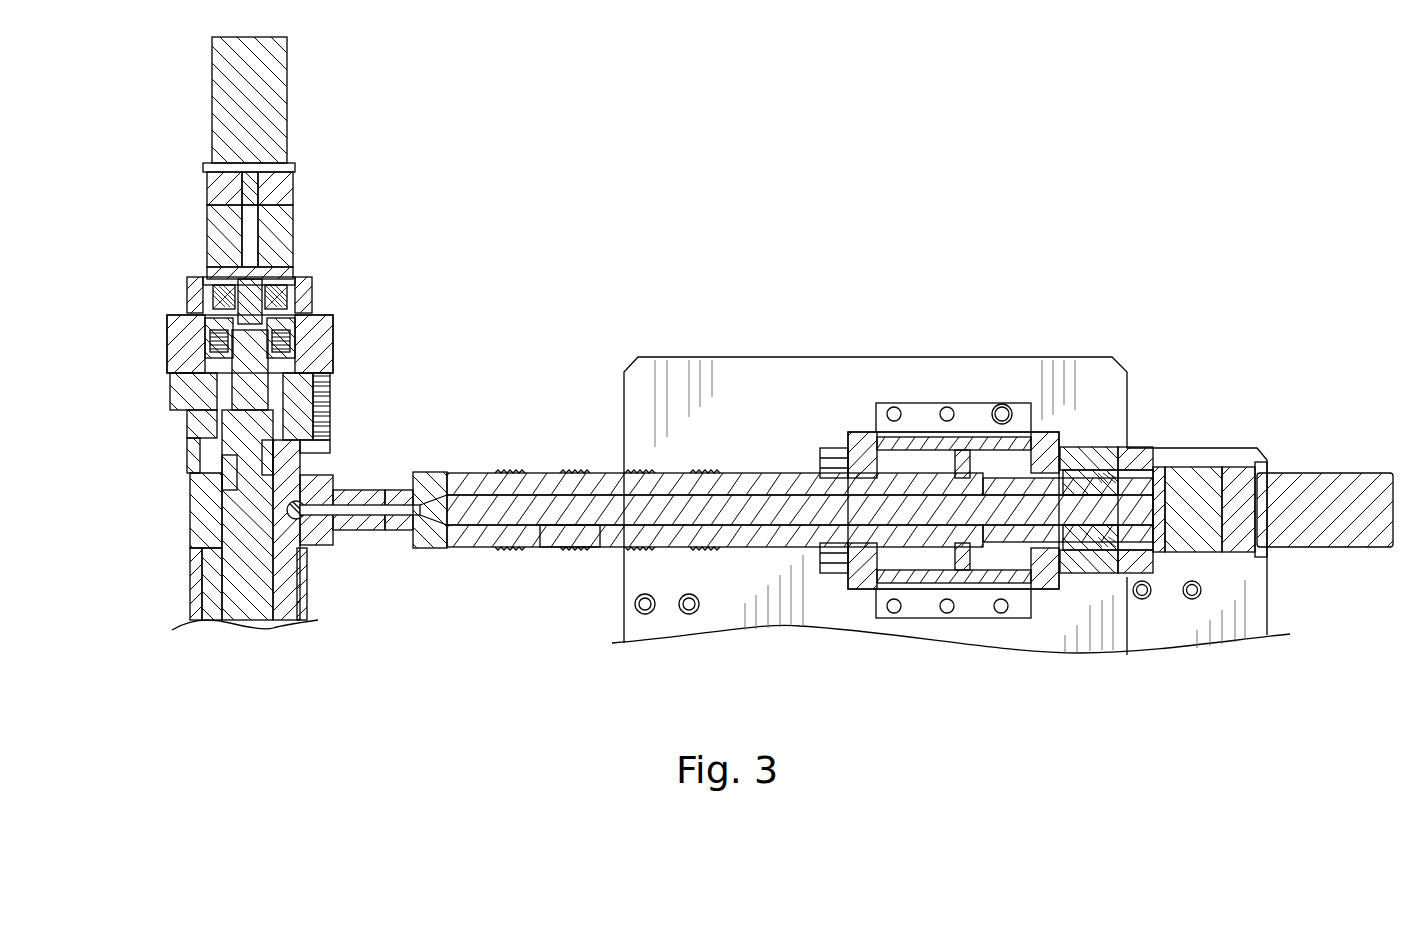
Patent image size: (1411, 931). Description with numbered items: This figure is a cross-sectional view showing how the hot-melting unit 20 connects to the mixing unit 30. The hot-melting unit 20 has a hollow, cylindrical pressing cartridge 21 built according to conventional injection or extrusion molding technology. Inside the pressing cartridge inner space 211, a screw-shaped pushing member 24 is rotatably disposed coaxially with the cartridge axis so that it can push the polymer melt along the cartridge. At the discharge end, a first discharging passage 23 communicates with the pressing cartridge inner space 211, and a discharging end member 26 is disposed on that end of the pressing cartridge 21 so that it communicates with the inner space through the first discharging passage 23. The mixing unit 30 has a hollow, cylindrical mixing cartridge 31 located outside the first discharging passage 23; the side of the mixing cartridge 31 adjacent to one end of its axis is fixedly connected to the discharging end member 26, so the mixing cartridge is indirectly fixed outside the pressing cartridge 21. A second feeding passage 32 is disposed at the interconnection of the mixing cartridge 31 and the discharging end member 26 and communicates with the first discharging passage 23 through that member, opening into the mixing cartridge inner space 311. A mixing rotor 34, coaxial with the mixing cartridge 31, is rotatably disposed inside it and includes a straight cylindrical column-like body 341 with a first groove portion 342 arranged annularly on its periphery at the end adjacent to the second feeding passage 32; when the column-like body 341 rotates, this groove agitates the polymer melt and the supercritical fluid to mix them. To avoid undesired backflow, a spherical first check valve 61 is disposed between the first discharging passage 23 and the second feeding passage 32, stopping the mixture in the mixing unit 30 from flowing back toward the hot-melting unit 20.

The hot-melting unit 20 is at (855, 345).
The pressing cartridge 21 is at (800, 516).
The pressing cartridge inner space 211 is at (567, 560).
The first discharging passage 23 is at (428, 560).
The screw-shaped pushing member 24 is at (676, 515).
The discharging end member 26 is at (386, 490).
The mixing unit 30 is at (318, 200).
The mixing cartridge 31 is at (187, 535).
The mixing cartridge inner space 311 is at (221, 586).
The second feeding passage 32 is at (329, 420).
The mixing rotor 34 is at (157, 539).
The column-like body 341 is at (251, 457).
The first groove portion 342 is at (237, 477).
The first check valve 61 is at (335, 490).